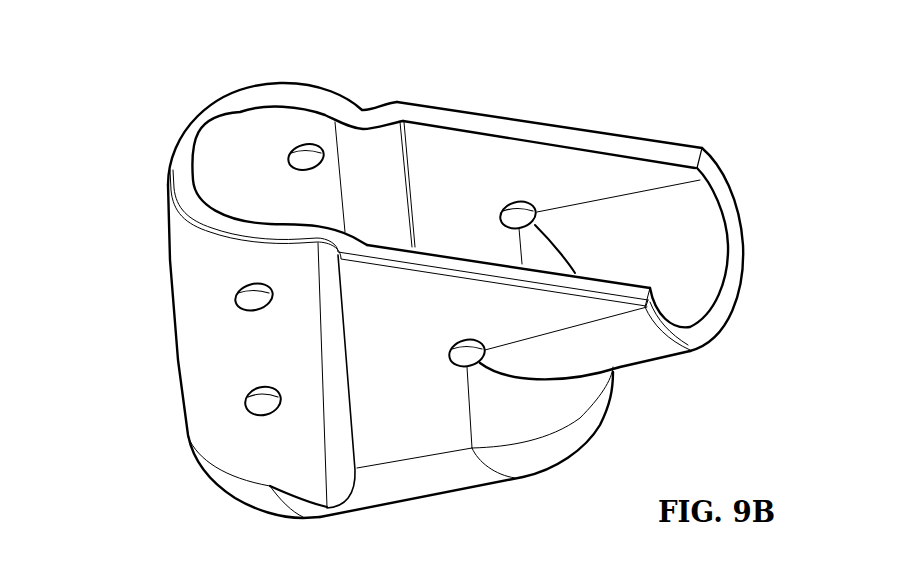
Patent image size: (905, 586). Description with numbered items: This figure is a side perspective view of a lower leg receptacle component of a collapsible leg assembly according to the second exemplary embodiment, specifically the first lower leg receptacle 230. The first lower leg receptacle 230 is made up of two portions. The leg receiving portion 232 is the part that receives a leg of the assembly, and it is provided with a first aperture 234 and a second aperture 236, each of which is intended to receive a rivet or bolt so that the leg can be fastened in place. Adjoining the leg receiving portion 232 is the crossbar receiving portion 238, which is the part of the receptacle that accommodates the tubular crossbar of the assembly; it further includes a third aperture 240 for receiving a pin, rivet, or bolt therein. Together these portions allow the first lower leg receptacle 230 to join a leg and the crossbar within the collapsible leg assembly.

The first lower leg receptacle 230 is at (170, 374).
The leg receiving portion 232 is at (168, 230).
The first aperture 234 is at (290, 151).
The second aperture 236 is at (250, 400).
The crossbar receiving portion 238 is at (667, 147).
The third aperture 240 is at (508, 205).